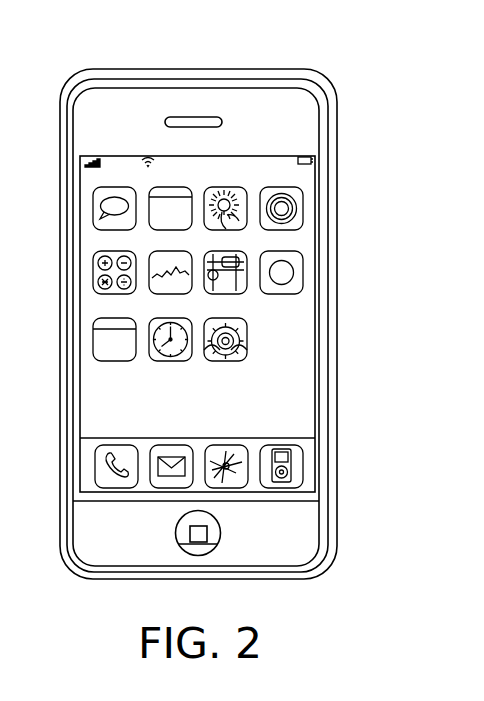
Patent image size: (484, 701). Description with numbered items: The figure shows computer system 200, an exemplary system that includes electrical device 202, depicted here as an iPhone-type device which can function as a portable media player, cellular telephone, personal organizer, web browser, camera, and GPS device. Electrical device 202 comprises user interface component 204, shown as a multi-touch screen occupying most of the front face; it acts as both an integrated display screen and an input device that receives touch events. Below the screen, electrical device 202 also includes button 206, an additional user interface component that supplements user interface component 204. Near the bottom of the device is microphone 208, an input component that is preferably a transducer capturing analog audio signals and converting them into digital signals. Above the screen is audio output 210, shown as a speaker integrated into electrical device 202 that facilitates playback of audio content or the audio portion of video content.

The computer system 200 is at (178, 48).
The electrical device 202 is at (323, 83).
The user interface component 204 is at (305, 364).
The button 206 is at (208, 532).
The microphone 208 is at (198, 556).
The audio output 210 is at (205, 108).